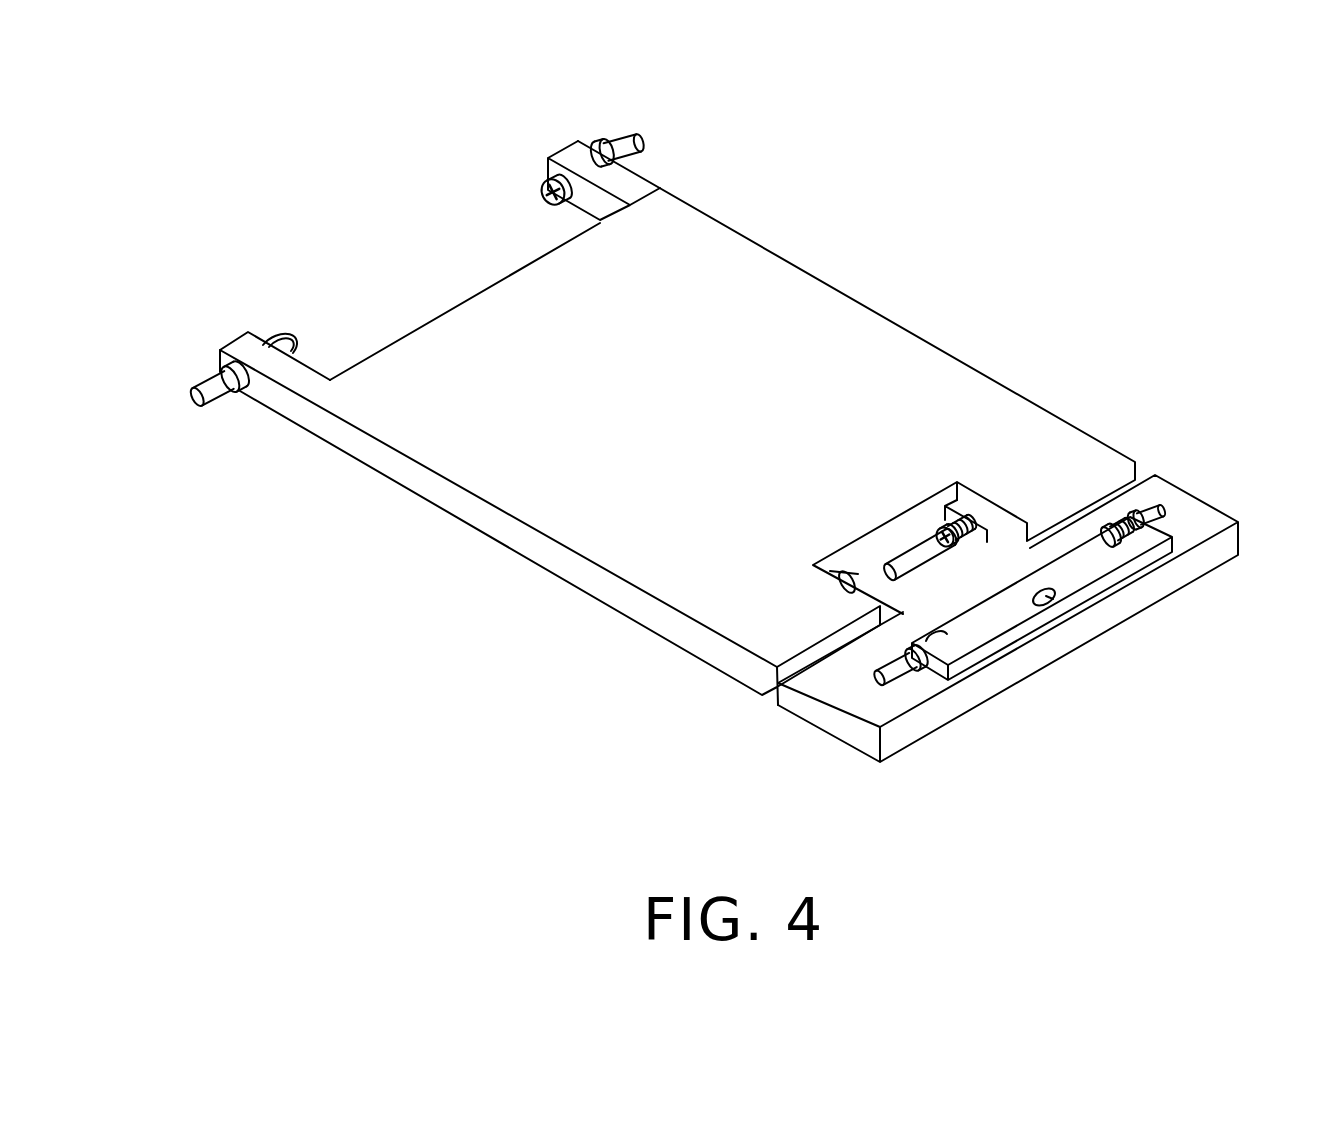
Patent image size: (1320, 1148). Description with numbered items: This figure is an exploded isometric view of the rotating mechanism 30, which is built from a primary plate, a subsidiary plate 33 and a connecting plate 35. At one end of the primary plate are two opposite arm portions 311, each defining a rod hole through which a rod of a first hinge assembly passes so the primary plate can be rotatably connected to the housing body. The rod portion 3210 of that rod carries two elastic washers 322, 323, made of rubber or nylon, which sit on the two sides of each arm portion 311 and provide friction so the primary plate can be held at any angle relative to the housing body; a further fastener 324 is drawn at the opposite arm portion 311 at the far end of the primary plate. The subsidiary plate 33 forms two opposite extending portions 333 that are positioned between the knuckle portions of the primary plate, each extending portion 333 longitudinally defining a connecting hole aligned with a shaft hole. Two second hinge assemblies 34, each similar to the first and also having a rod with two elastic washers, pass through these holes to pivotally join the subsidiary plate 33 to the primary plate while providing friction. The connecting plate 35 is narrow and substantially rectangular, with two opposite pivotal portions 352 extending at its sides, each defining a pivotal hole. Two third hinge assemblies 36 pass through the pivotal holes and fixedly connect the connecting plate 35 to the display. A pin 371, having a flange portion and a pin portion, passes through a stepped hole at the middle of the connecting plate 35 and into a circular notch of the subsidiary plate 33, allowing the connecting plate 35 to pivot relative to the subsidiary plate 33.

The rotating mechanism 30 is at (818, 204).
The arm portion 311 is at (573, 153).
The washer 322 is at (272, 337).
The washer 323 is at (222, 360).
The rod portion 3210 is at (210, 397).
The screw 324 is at (550, 172).
The subsidiary plate 33 is at (1157, 490).
The extending portion 333 is at (832, 572).
The second hinge assembly 34 is at (958, 522).
The connecting plate 35 is at (1100, 563).
The pivotal portion 352 is at (1142, 522).
The third hinge assembly 36 is at (947, 640).
The pin 371 is at (1047, 604).